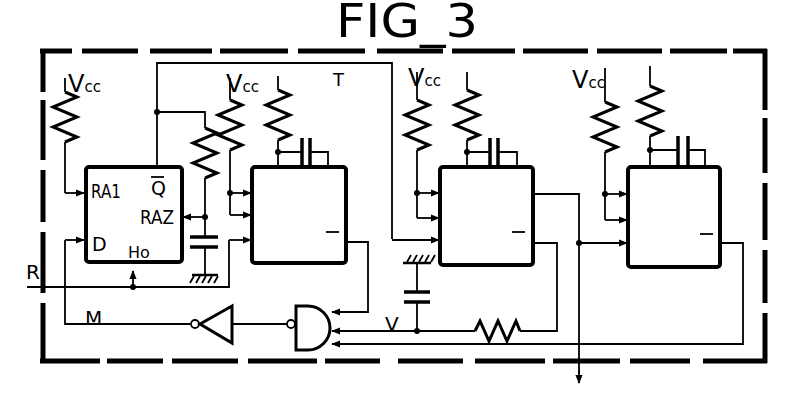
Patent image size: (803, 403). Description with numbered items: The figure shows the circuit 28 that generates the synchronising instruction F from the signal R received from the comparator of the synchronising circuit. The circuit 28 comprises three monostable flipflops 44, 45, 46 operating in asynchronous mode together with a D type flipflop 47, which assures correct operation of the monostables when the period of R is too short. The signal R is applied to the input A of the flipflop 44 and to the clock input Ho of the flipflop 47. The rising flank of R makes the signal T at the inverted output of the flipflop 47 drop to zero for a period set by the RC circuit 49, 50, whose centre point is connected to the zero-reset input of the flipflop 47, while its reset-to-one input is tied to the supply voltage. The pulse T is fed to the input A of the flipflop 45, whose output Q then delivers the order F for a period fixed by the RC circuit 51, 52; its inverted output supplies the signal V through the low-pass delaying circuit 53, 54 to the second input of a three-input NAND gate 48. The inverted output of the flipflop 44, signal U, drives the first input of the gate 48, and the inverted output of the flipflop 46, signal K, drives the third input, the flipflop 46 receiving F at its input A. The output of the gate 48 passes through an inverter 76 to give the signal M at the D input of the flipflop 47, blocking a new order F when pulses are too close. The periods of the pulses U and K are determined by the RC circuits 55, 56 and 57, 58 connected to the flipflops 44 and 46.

The circuit 28 is at (750, 70).
The monostable flipflop 44 is at (290, 265).
The monostable flipflop 45 is at (486, 265).
The monostable flipflop 46 is at (666, 268).
The D type flipflop 47 is at (148, 263).
The NAND gate 48 is at (296, 340).
The resistor of RC circuit 49 is at (200, 140).
The capacitor of RC circuit 50 is at (218, 250).
The resistor of RC circuit 51 is at (478, 108).
The capacitor of RC circuit 52 is at (500, 150).
The resistor of low-pass circuit 53 is at (505, 323).
The capacitor of low-pass circuit 54 is at (431, 297).
The resistor of RC circuit 55 is at (289, 112).
The capacitor of RC circuit 56 is at (312, 150).
The resistor of RC circuit 57 is at (664, 114).
The capacitor of RC circuit 58 is at (692, 140).
The inverter 76 is at (204, 334).